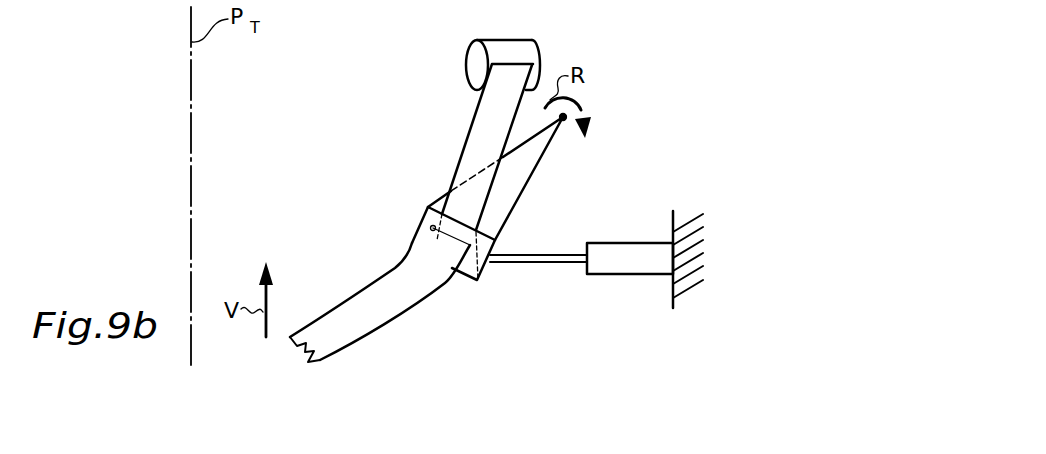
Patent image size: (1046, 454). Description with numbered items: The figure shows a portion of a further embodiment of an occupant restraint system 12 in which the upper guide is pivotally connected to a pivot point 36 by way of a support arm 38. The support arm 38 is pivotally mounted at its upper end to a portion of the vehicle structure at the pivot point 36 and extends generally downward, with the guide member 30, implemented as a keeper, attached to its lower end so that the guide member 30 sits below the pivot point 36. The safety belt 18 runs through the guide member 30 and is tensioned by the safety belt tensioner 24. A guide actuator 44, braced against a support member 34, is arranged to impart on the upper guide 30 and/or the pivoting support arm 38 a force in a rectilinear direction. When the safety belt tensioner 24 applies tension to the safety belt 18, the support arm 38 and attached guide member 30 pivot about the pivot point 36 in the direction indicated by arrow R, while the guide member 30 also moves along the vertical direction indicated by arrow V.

The occupant restraint system 12 is at (622, 94).
The safety belt 18 is at (362, 319).
The safety belt tensioner 24 is at (478, 62).
The guide member 30 is at (477, 276).
The support member 34 is at (685, 284).
The pivot point 36 is at (566, 122).
The support arm 38 is at (525, 194).
The guide actuator 44 is at (617, 258).